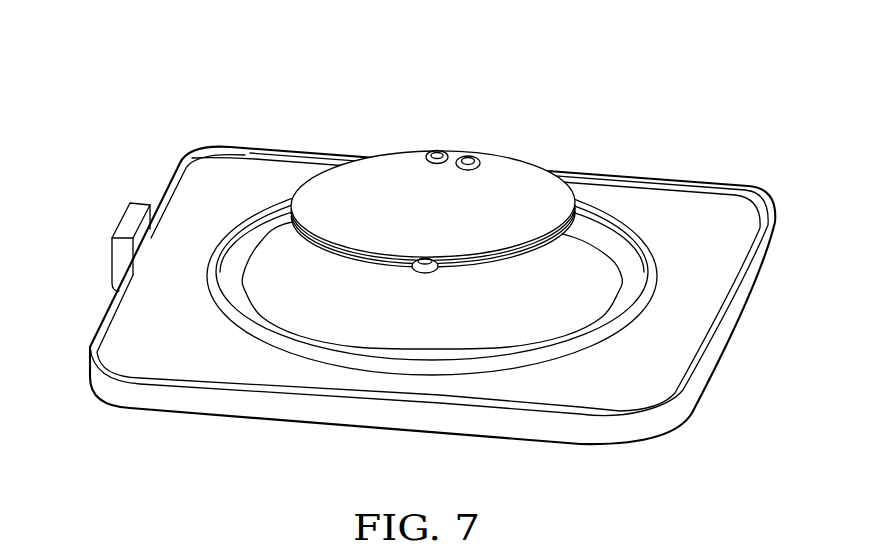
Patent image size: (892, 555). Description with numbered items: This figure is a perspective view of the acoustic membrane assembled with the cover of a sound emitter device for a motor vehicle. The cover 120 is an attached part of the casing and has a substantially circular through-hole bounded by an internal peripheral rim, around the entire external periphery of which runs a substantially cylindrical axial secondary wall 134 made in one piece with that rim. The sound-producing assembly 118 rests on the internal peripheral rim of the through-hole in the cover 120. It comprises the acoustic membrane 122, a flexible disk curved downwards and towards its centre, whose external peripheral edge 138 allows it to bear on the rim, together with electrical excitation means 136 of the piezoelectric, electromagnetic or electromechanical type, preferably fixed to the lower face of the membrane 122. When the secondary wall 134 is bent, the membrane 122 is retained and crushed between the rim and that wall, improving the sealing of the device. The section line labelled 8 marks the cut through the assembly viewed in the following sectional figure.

The cover 120 is at (291, 108).
The acoustic membrane 122 is at (583, 267).
The secondary wall 134 is at (543, 355).
The external peripheral edge 138 is at (253, 247).
The electrical excitation means 136 is at (533, 181).
The sound-producing assembly 118 is at (460, 140).
The section line 8- 8 is at (110, 285).